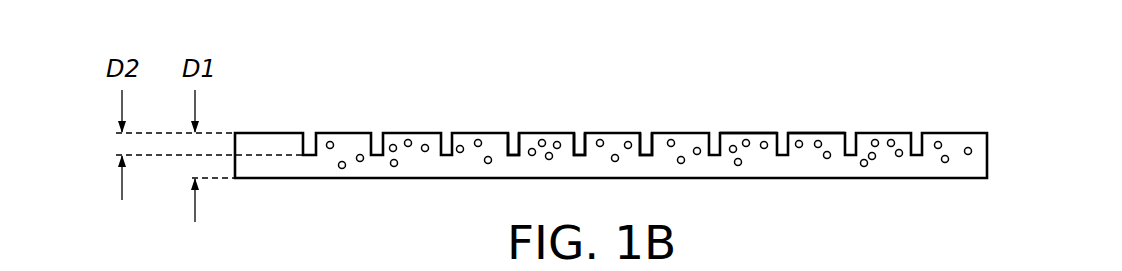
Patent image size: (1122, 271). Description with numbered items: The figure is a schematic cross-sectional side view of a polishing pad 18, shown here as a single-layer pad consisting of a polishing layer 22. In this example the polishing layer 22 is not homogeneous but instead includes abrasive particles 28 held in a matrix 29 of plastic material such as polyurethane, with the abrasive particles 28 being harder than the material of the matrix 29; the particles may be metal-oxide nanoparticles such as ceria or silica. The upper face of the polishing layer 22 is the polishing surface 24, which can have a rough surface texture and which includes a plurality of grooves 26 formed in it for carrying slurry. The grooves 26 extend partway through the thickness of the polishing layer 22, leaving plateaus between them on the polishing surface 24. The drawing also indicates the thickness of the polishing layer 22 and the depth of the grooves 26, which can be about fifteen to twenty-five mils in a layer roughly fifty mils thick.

The polishing pad 18 is at (1017, 94).
The polishing layer 22 is at (988, 150).
The polishing surface 24 is at (823, 133).
The grooves 26 is at (645, 131).
The abrasive particles 28 is at (681, 156).
The matrix 29 is at (758, 133).